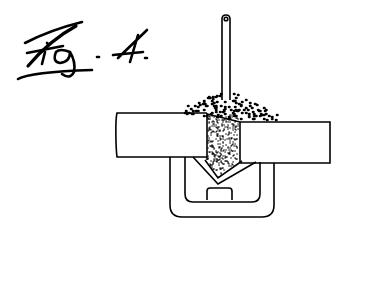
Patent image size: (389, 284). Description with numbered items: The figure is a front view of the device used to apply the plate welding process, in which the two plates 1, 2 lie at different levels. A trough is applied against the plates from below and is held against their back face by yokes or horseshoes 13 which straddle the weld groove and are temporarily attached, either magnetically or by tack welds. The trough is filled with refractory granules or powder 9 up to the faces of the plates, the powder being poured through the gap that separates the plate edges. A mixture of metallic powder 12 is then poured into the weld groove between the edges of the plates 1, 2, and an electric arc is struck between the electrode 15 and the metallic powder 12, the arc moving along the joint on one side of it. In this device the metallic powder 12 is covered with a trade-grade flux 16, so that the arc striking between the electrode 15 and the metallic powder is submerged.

The plate 1 is at (119, 135).
The plate 2 is at (330, 152).
The refractory granules or powder 9 is at (215, 167).
The mixture of metallic powder 12 is at (230, 135).
The yoke or horseshoe 13 is at (253, 208).
The electrode 15 is at (230, 45).
The flux 16 is at (247, 103).